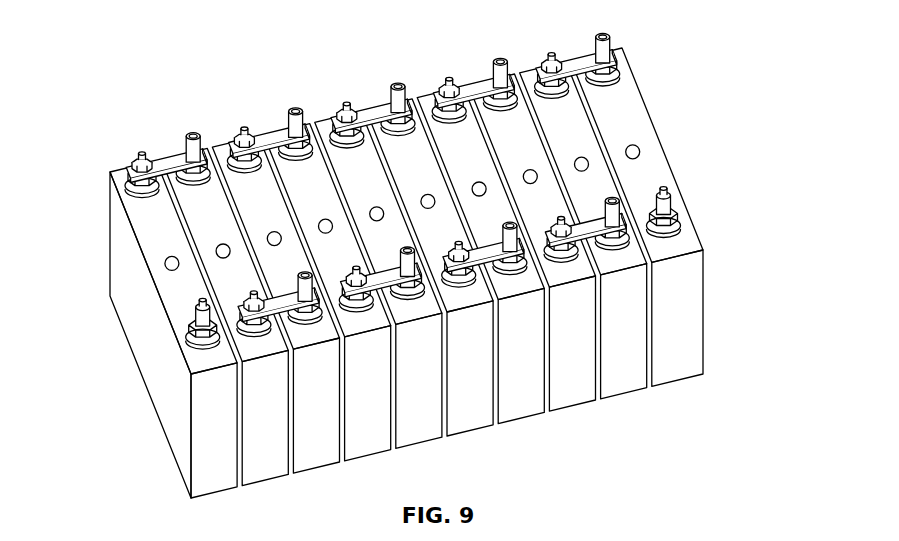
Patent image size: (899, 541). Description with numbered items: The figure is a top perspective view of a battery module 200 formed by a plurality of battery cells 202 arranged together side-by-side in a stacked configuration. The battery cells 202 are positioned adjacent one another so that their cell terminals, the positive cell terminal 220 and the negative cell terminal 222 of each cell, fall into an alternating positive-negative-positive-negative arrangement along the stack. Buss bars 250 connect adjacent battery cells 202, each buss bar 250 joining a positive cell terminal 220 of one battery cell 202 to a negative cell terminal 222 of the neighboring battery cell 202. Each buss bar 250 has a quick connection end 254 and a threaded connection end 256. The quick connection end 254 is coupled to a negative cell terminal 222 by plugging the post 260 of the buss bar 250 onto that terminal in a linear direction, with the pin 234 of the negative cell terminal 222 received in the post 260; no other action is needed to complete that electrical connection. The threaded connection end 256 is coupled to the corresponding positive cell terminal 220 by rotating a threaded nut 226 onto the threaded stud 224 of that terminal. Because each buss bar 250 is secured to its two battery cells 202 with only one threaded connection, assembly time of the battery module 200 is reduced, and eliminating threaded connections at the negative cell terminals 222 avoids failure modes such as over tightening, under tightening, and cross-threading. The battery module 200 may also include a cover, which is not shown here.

The battery module 200 is at (327, 48).
The battery cell 202 is at (372, 416).
The positive cell terminal 220 is at (683, 216).
The negative cell terminal 222 is at (178, 346).
The threaded stud 224 is at (553, 68).
The threaded nut 226 is at (535, 78).
The pin 234 is at (177, 345).
The buss bar 250 is at (485, 87).
The quick connection end 254 is at (500, 60).
The threaded connection end 256 is at (442, 76).
The post 260 is at (390, 112).